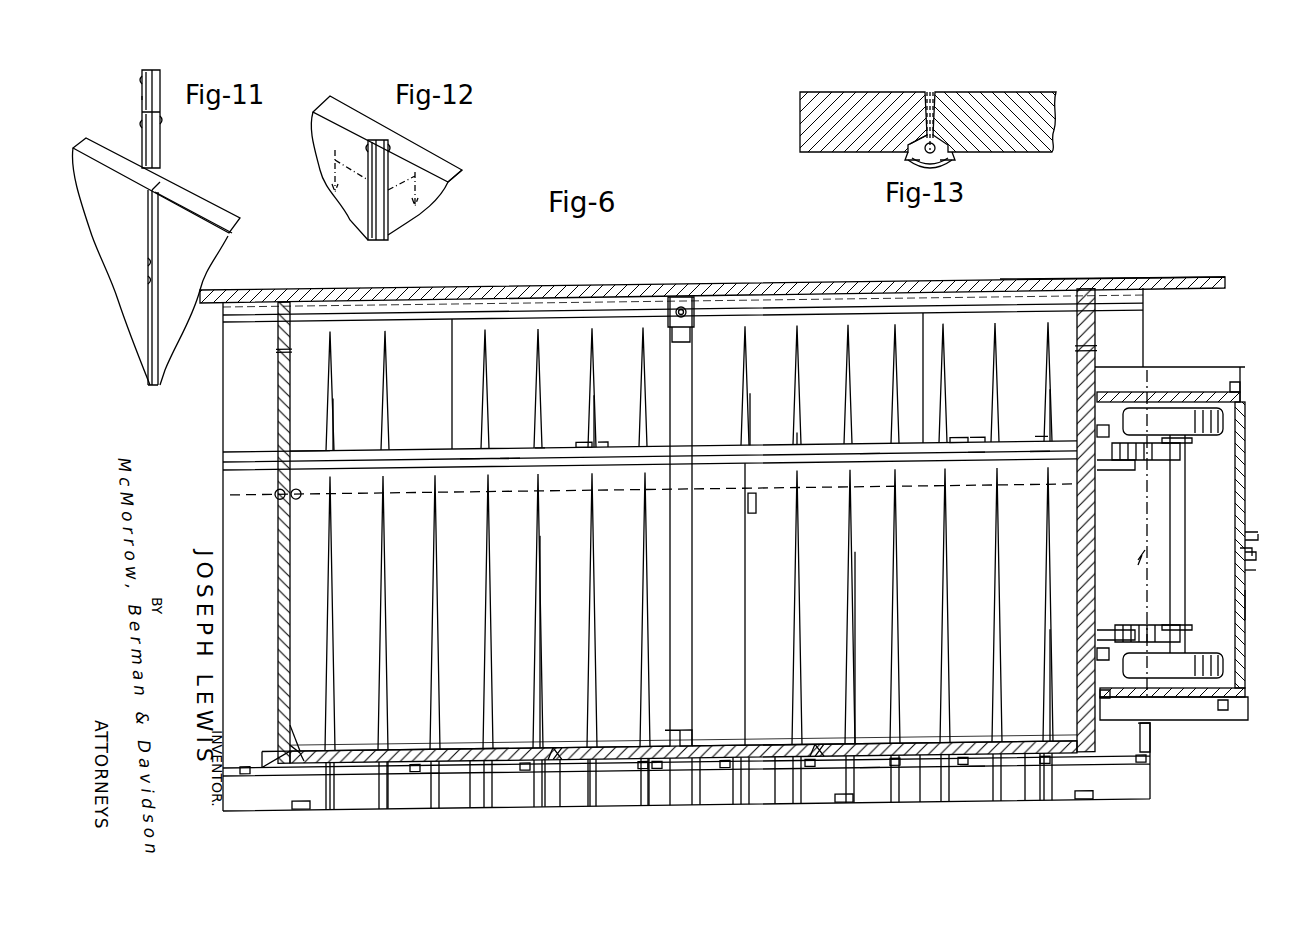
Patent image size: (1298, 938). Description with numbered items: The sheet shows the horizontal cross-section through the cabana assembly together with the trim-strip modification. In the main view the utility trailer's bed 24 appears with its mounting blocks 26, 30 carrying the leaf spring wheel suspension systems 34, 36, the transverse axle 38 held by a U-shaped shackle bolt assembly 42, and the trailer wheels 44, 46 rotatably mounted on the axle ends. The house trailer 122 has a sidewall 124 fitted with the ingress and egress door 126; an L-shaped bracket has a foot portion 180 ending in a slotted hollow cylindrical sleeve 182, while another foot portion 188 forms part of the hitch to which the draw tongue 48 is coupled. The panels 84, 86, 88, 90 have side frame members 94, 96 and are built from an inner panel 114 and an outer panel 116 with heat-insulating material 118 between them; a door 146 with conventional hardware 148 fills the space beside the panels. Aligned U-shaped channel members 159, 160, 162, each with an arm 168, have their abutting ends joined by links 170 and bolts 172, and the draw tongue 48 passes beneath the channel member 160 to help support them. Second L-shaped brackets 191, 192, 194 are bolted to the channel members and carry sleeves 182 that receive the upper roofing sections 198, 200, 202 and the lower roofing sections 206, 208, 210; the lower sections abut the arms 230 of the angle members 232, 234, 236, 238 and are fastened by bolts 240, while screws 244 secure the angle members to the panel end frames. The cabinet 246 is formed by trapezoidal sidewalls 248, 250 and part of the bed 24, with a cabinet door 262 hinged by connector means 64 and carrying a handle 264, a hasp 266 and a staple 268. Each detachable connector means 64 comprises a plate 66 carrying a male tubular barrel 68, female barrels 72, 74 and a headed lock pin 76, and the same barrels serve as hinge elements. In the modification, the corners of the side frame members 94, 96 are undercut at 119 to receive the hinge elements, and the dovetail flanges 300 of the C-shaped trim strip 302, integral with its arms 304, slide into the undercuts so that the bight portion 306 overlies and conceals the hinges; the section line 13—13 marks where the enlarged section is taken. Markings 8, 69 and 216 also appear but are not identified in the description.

In FIG. 12, the wall panel 8 is at (456, 158).
In FIG. 12, the section line 13— 13 is at (386, 178).
In FIG. 6, the bed 24 is at (1076, 558).
In FIG. 6, the mounting block 26 is at (1106, 470).
In FIG. 6, the mounting block 30 is at (1096, 632).
In FIG. 6, the leaf spring wheel suspension system 34 is at (1130, 462).
In FIG. 6, the leaf spring wheel suspension system 36 is at (1132, 624).
In FIG. 6, the axle 38 is at (1185, 516).
In FIG. 6, the U-shaped shackle bolt assembly 42 is at (1192, 462).
In FIG. 6, the trailer wheel 44 is at (1190, 435).
In FIG. 6, the trailer wheel 46 is at (1226, 660).
In FIG. 6, the draw tongue 48 is at (692, 530).
In FIG. 6, the detachable connector means 64 is at (274, 300).
In FIG. 6, the rectangular plate 66 is at (300, 806).
In FIG. 11, the first hollow tubular barrel 68 is at (156, 266).
In FIG. 6, the corner fitting 69 is at (1242, 400).
In FIG. 11, the hollow tubular barrel 72 is at (158, 258).
In FIG. 13, the hollow tubular barrel 72 is at (948, 154).
In FIG. 11, the hollow tubular barrel 74 is at (156, 282).
In FIG. 13, the headed lock pin 76 is at (938, 130).
In FIG. 11, the panel 84 is at (116, 146).
In FIG. 12, the panel 84 is at (371, 115).
In FIG. 13, the panel 84 is at (904, 84).
In FIG. 6, the panel 84 is at (910, 736).
In FIG. 11, the panel 86 is at (222, 210).
In FIG. 13, the panel 86 is at (1004, 86).
In FIG. 6, the panel 86 is at (736, 738).
In FIG. 6, the panel 88 is at (420, 738).
In FIG. 6, the panel 90 is at (264, 595).
In FIG. 11, the side frame member 94 is at (122, 312).
In FIG. 6, the side frame member 94 is at (280, 500).
In FIG. 11, the side frame member 96 is at (166, 336).
In FIG. 6, the side frame member 96 is at (262, 752).
In FIG. 6, the inner elongated rectangular panel 114 is at (292, 744).
In FIG. 6, the outer elongated rectangular panel 116 is at (276, 658).
In FIG. 6, the heat-insulating material 118 is at (296, 690).
In FIG. 11, the undercut 119 is at (160, 182).
In FIG. 6, the house trailer 122 is at (305, 318).
In FIG. 6, the sidewall 124 is at (980, 279).
In FIG. 6, the ingress and egress door 126 is at (580, 286).
In FIG. 6, the door 146 is at (292, 408).
In FIG. 6, the conventional hardware 148 is at (316, 499).
In FIG. 6, the U-shaped channel member 159 is at (1024, 438).
In FIG. 6, the U-shaped channel member 160 is at (818, 438).
In FIG. 6, the U-shaped channel member 162 is at (505, 438).
In FIG. 6, the arm 168 is at (252, 448).
In FIG. 6, the link 170 is at (616, 442).
In FIG. 6, the bolt 172 is at (584, 442).
In FIG. 6, the foot portion 180 is at (462, 446).
In FIG. 6, the hollow cylindrical sleeve 182 is at (468, 468).
In FIG. 6, the foot portion 188 is at (694, 318).
In FIG. 6, the second L-shaped bracket 191 is at (1028, 470).
In FIG. 6, the second L-shaped bracket 192 is at (874, 472).
In FIG. 6, the second L-shaped bracket 194 is at (510, 474).
In FIG. 6, the roofing section 198 is at (995, 382).
In FIG. 6, the roofing section 200 is at (820, 384).
In FIG. 6, the roofing section 202 is at (486, 388).
In FIG. 6, the roofing section 206 is at (897, 635).
In FIG. 6, the roofing section 208 is at (612, 639).
In FIG. 6, the roofing section 210 is at (409, 641).
In FIG. 6, the spike 216 is at (328, 426).
In FIG. 6, the arm 230 is at (345, 810).
In FIG. 6, the angle member 232 is at (978, 800).
In FIG. 6, the angle member 234 is at (874, 802).
In FIG. 6, the angle member 236 is at (558, 806).
In FIG. 6, the angle member 238 is at (428, 785).
In FIG. 6, the bolt 240 is at (398, 810).
In FIG. 6, the screw 244 is at (476, 808).
In FIG. 6, the cabinet 246 is at (1236, 488).
In FIG. 6, the trapezoidal sidewall 248 is at (1180, 390).
In FIG. 6, the trapezoidal sidewall 250 is at (1178, 698).
In FIG. 6, the cabinet door 262 is at (1246, 624).
In FIG. 6, the handle 264 is at (1250, 458).
In FIG. 6, the hasp 266 is at (1270, 572).
In FIG. 6, the staple 268 is at (1240, 552).
In FIG. 11, the dovetail flange 300 is at (175, 66).
In FIG. 12, the dovetail flange 300 is at (385, 140).
In FIG. 13, the dovetail flange 300 is at (976, 130).
In FIG. 11, the trim strip 302 is at (132, 97).
In FIG. 12, the trim strip 302 is at (358, 213).
In FIG. 11, the arm 304 is at (140, 72).
In FIG. 12, the arm 304 is at (366, 140).
In FIG. 13, the arm 304 is at (906, 162).
In FIG. 11, the bight portion 306 is at (164, 120).
In FIG. 12, the bight portion 306 is at (390, 238).
In FIG. 13, the bight portion 306 is at (936, 168).